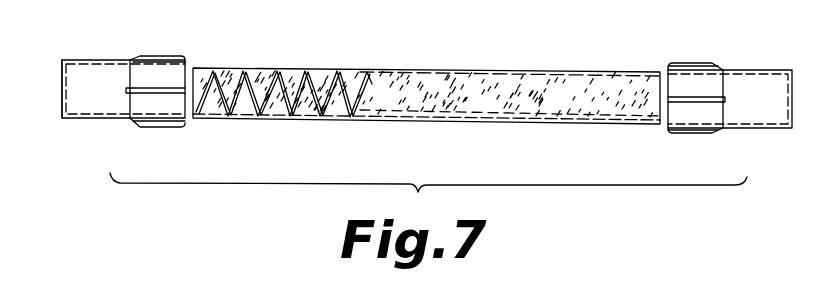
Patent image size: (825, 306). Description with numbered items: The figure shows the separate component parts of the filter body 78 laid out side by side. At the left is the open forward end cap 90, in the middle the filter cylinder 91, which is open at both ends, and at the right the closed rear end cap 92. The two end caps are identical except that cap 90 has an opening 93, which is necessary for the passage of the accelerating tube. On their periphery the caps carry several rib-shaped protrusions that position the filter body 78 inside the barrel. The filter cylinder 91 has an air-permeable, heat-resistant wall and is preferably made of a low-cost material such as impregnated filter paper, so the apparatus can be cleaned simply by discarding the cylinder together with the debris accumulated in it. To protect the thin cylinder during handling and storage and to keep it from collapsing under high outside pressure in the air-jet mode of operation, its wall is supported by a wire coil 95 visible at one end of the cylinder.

The filter body 78 is at (428, 174).
The open forward end cap 90 is at (100, 77).
The filter cylinder 91 is at (430, 73).
The closed rear end cap 92 is at (742, 85).
The opening 93 is at (62, 78).
The coil spring 95 is at (252, 88).